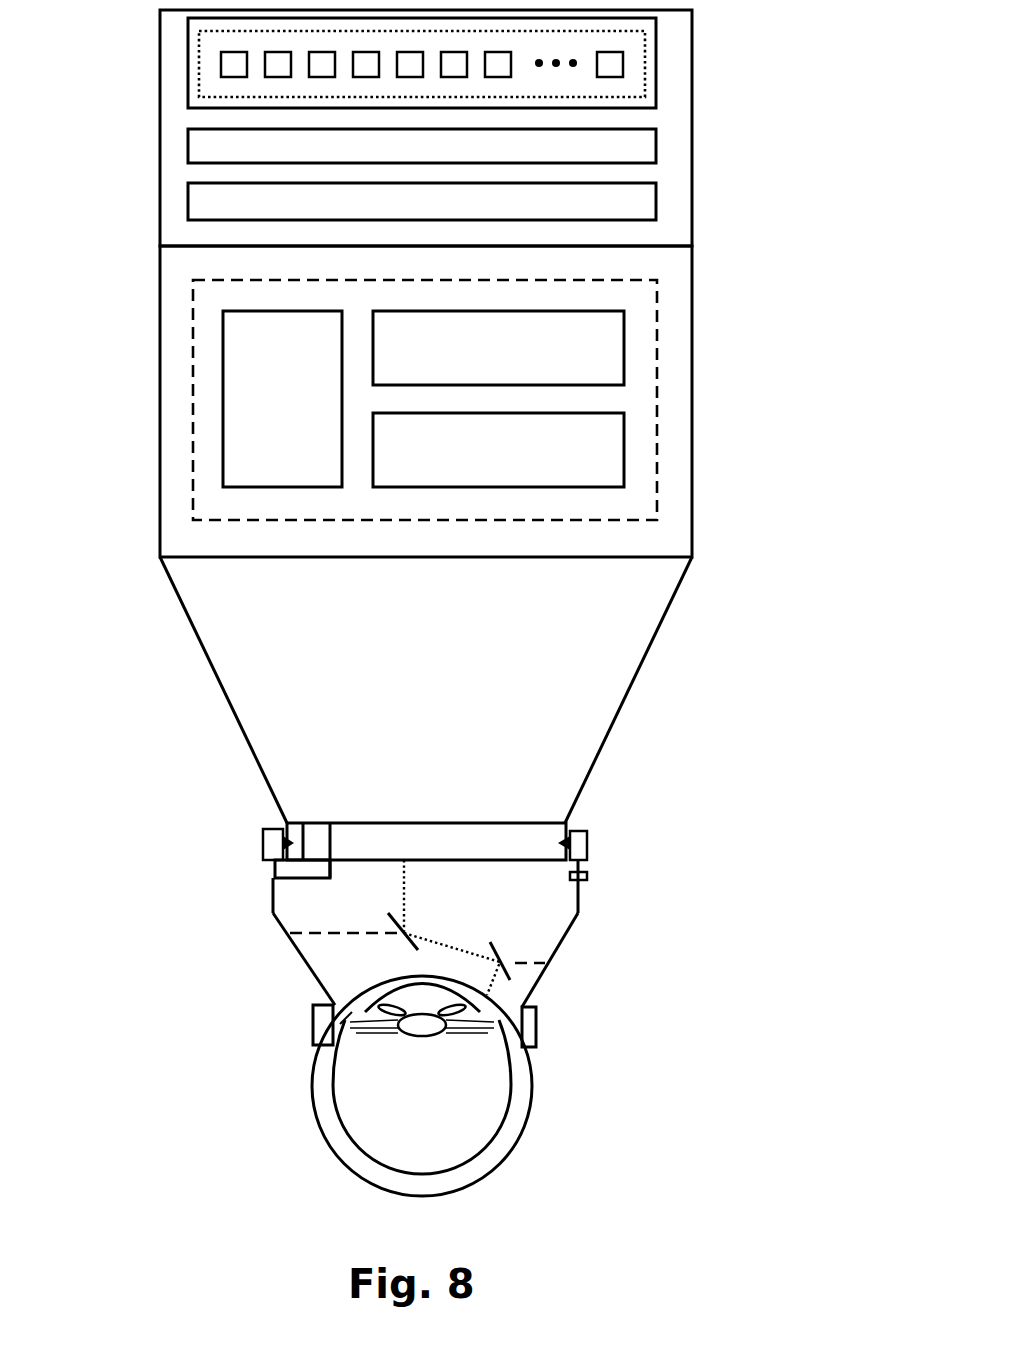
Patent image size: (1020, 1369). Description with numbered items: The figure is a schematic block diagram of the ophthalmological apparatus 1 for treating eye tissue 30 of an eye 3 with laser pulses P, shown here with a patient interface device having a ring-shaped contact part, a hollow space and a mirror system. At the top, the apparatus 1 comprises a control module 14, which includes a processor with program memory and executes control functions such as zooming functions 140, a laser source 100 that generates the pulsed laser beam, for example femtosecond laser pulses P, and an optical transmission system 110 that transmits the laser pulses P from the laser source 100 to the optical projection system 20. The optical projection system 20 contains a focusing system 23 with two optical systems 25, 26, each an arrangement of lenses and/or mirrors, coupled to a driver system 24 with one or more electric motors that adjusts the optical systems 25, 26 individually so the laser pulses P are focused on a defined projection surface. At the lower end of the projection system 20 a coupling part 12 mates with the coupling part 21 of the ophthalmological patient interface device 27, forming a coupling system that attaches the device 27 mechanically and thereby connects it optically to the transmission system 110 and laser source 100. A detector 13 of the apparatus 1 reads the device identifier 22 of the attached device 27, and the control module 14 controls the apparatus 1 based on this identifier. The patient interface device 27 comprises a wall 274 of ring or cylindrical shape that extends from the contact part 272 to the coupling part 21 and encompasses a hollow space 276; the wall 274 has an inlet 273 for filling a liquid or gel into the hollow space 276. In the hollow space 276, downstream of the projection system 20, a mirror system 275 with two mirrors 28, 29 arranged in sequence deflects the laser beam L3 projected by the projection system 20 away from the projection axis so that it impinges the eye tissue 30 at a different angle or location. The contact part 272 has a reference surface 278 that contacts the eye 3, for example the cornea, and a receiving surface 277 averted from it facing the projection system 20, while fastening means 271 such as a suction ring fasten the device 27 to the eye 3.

The ophthalmological apparatus 1 is at (152, 163).
The control module 14 is at (198, 67).
The zooming functions 140 is at (637, 62).
The laser source 100 is at (645, 146).
The optical transmission system 110 is at (645, 201).
The optical projection system 20 is at (132, 605).
The focusing system 23 is at (193, 397).
The driver system 24 is at (238, 423).
The optical system 25 is at (612, 339).
The optical system 26 is at (612, 461).
The coupling part 12 is at (480, 807).
The detector 13 is at (256, 816).
The device identifier 22 is at (280, 868).
The coupling part 21 is at (587, 843).
The inlet 273 is at (595, 883).
The ophthalmological patient interface device 27 is at (262, 992).
The hollow space 276 is at (307, 952).
The wall 274 is at (555, 957).
The laser beam L3 is at (383, 896).
The mirror system 275 is at (455, 930).
The mirror 28 is at (403, 944).
The mirror 29 is at (506, 951).
The laser pulses P is at (490, 982).
The eye 3 is at (310, 1158).
The eye tissue 30 is at (518, 1112).
The reference surface 278 is at (343, 1027).
The fastening means 271 is at (330, 1032).
The receiving surface 277 is at (345, 993).
The contact part 272 is at (510, 1012).